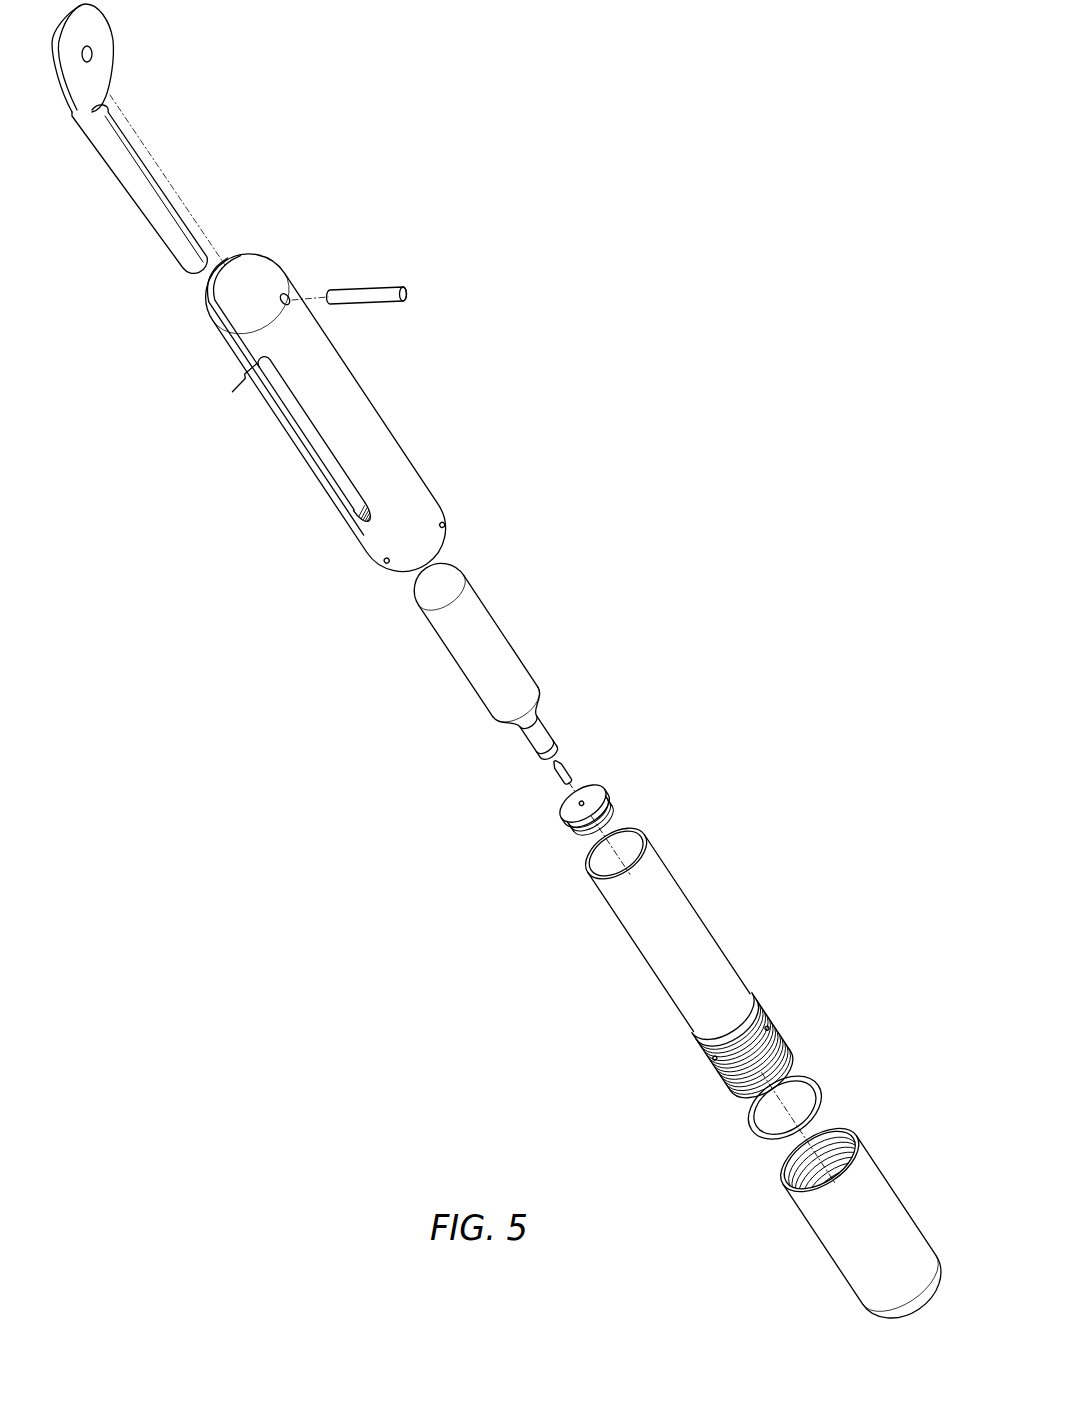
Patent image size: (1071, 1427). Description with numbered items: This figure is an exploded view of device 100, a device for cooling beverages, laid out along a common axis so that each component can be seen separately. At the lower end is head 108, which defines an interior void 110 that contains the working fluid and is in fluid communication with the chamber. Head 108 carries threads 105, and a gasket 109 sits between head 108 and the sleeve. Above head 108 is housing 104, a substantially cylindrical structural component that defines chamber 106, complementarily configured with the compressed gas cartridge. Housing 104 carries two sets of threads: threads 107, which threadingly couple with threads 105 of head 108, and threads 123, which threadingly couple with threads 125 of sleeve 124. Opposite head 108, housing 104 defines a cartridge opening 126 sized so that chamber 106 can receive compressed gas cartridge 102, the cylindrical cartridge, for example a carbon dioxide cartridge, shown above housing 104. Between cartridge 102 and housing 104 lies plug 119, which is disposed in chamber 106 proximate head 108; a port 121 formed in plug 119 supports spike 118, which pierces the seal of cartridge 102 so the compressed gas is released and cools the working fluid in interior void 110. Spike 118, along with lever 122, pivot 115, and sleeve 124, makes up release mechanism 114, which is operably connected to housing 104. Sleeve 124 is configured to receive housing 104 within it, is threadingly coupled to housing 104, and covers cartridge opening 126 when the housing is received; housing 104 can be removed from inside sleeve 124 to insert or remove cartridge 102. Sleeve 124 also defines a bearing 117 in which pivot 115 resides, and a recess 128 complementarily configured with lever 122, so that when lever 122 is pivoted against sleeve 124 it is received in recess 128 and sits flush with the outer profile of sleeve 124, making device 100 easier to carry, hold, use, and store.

The device 100 is at (256, 63).
The release mechanism 114 is at (127, 138).
The lever 122 is at (101, 140).
The sleeve 124 is at (325, 412).
The recess 128 is at (323, 432).
The threads 125 is at (357, 531).
The bearing 117 is at (289, 306).
The pivot 115 is at (368, 290).
The compressed gas cartridge 102 is at (551, 697).
The chamber 106 is at (507, 656).
The spike 118 is at (572, 774).
The plug 119 is at (591, 810).
The port 121 is at (579, 803).
The housing 104 is at (631, 925).
The cartridge opening 126 is at (585, 870).
The threads 107 is at (778, 1077).
The threads 123 is at (770, 1006).
The gasket 109 is at (824, 1097).
The head 108 is at (836, 1218).
The threads 105 is at (797, 1170).
The interior void 110 is at (836, 1168).